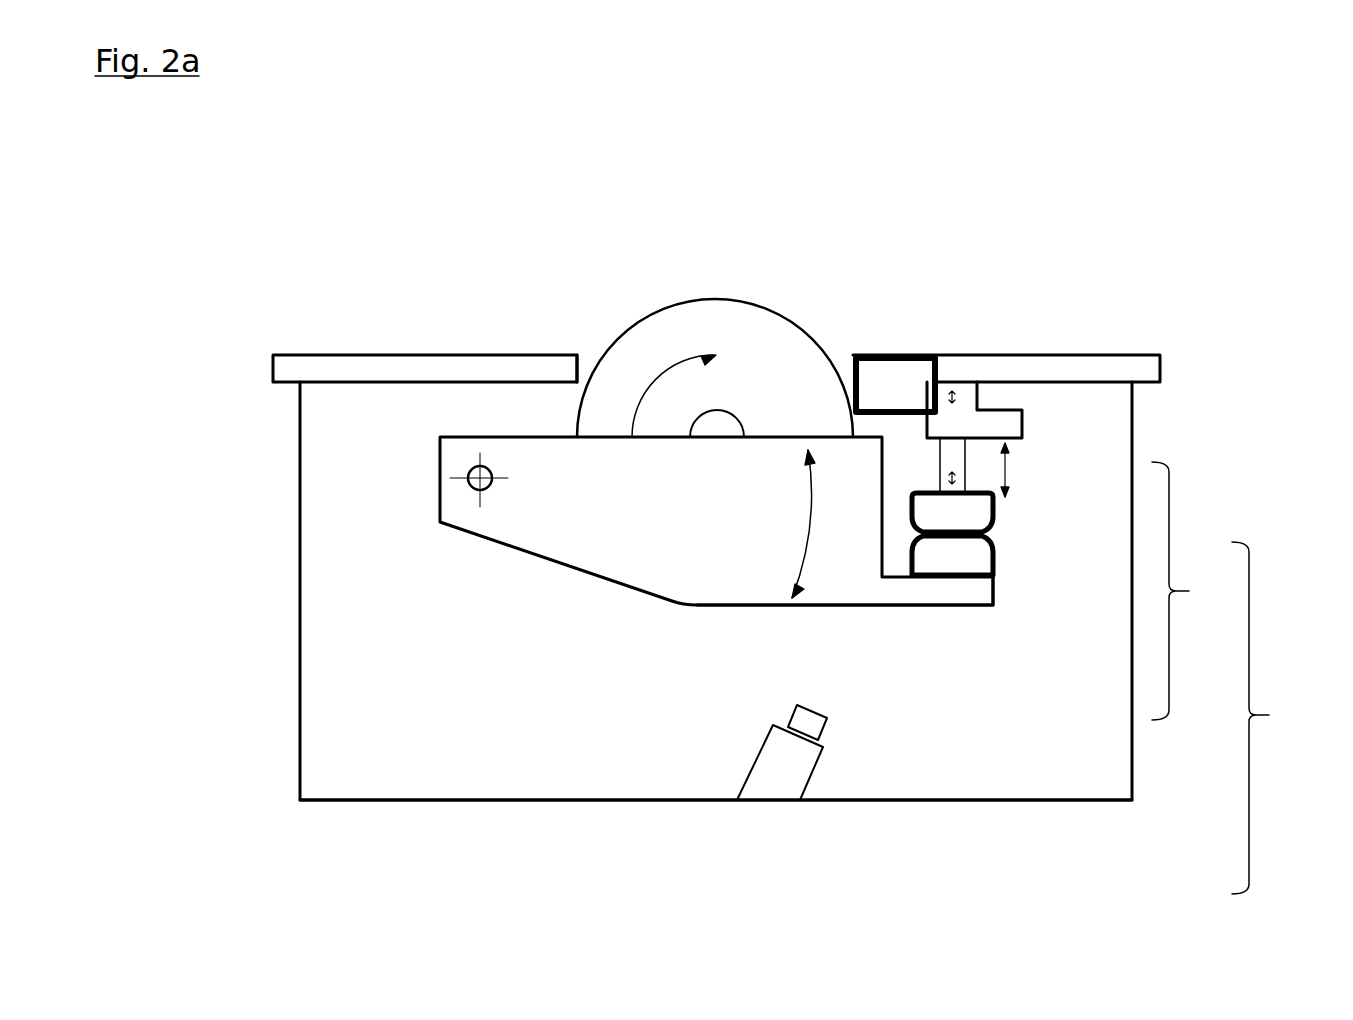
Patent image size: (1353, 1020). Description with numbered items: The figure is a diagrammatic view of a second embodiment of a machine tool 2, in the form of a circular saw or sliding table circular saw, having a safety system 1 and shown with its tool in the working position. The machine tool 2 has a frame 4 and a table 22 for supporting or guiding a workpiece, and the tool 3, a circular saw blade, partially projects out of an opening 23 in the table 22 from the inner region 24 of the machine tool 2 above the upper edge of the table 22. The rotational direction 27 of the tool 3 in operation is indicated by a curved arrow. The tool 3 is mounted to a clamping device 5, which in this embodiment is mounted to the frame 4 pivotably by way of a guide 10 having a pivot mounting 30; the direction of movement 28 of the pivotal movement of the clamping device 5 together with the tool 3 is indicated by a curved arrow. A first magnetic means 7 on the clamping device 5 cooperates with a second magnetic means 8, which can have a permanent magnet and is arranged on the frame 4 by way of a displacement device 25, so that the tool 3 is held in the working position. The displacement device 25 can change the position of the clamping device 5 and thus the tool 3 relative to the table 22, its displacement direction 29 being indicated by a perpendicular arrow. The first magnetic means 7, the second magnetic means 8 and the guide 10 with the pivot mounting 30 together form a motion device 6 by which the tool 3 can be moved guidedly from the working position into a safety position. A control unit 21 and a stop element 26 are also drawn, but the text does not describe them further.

The safety system 1 is at (1275, 718).
The machine tool 2 is at (942, 190).
The tool 3 is at (662, 333).
The frame 4 is at (298, 533).
The clamping device 5 is at (835, 605).
The motion device 6 is at (1189, 591).
The first magnetic means 7 is at (973, 560).
The second magnetic means 8 is at (992, 513).
The guide 10 is at (820, 573).
The control unit 21 is at (881, 401).
The table 22 is at (407, 355).
The opening 23 is at (592, 347).
The inner region 24 is at (380, 768).
The displacement device 25 is at (990, 422).
The stop element 26 is at (770, 778).
The rotational direction 27 is at (647, 388).
The direction of movement 28 is at (808, 532).
The displacement direction 29 is at (1007, 477).
The pivot mounting 30 is at (472, 488).